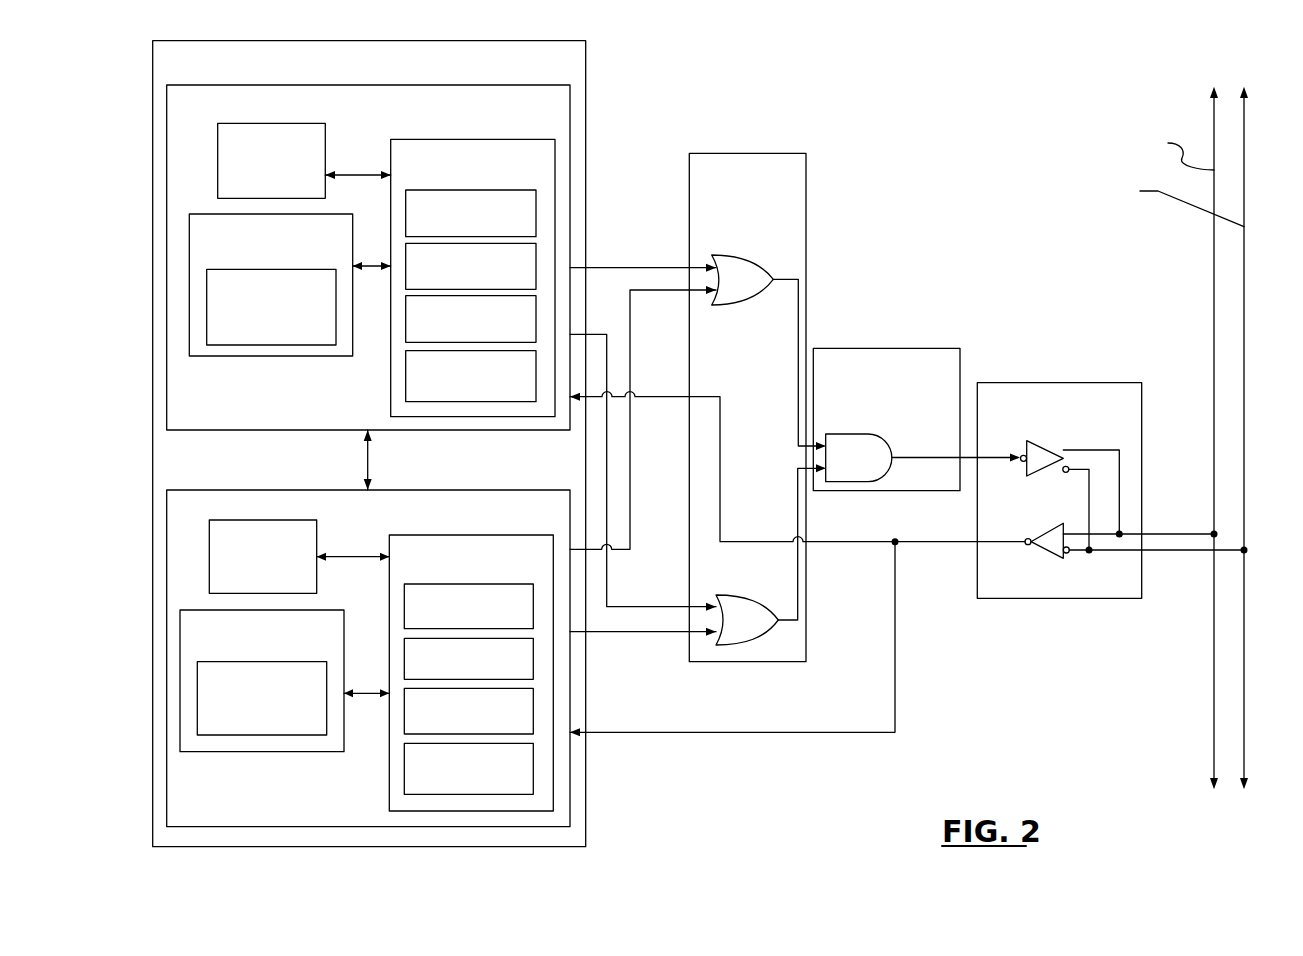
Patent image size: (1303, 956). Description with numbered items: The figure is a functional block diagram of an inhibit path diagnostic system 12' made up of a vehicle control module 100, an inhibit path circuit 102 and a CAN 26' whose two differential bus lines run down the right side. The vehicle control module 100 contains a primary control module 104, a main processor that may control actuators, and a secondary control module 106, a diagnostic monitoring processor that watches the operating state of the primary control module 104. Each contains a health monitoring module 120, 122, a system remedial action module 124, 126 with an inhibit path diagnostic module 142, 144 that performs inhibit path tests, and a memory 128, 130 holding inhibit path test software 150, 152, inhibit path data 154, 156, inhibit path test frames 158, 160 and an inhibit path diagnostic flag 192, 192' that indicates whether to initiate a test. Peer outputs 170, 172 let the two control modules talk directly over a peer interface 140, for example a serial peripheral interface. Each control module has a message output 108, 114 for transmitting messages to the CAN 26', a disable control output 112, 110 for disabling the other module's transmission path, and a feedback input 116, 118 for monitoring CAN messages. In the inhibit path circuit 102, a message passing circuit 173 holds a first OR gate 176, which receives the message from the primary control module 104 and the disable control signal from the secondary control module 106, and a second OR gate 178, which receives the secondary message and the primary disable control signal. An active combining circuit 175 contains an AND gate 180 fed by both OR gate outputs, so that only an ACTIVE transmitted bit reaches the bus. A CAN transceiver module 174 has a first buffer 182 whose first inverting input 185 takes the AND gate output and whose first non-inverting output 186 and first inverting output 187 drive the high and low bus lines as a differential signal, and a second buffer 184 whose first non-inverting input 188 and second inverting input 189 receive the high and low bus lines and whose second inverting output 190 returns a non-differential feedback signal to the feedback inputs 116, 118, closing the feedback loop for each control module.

The vehicle control module 100 is at (586, 78).
The inhibit path circuit 102 is at (1009, 284).
The primary control module 104 is at (570, 140).
The secondary control module 106 is at (264, 490).
The message output 108 is at (570, 268).
The disable control output 110 is at (572, 549).
The disable control output 112 is at (570, 334).
The message output 114 is at (576, 632).
The feedback input 116 is at (580, 396).
The feedback input 118 is at (574, 734).
The health monitoring module 120 is at (218, 126).
The health monitoring module 122 is at (215, 520).
The system remedial action module 124 is at (226, 356).
The system remedial action module 126 is at (240, 752).
The memory 128 is at (475, 139).
The memory 130 is at (510, 535).
The peer interface 140 is at (368, 460).
The inhibit path diagnostic module 142 is at (272, 345).
The inhibit path diagnostic module 144 is at (290, 735).
The inhibit path test software 150 is at (536, 213).
The inhibit path test software 152 is at (404, 596).
The inhibit path data 154 is at (536, 260).
The inhibit path data 156 is at (404, 660).
The inhibit path test frames 158 is at (406, 318).
The inhibit path test frames 160 is at (404, 720).
The peer output 170 is at (368, 432).
The peer output 172 is at (368, 489).
The message passing circuit 173 is at (797, 153).
The CAN transceiver module 174 is at (1064, 382).
The active combining circuit 175 is at (910, 348).
The first OR gate 176 is at (750, 258).
The second OR gate 178 is at (750, 598).
The AND gate 180 is at (886, 438).
The first buffer 182 is at (1028, 468).
The second buffer 184 is at (1044, 554).
The first inverting input 185 is at (1023, 455).
The first non-inverting output 186 is at (1064, 450).
The first inverting output 187 is at (1067, 472).
The first non-inverting input 188 is at (1064, 533).
The second inverting input 189 is at (1068, 553).
The second inverting output 190 is at (1027, 539).
The inhibit path diagnostic flag 192 is at (438, 381).
The inhibit path diagnostic flag 192' is at (424, 779).
The inhibit path diagnostic system 12' is at (1166, 418).
The CAN 26' is at (1195, 438).